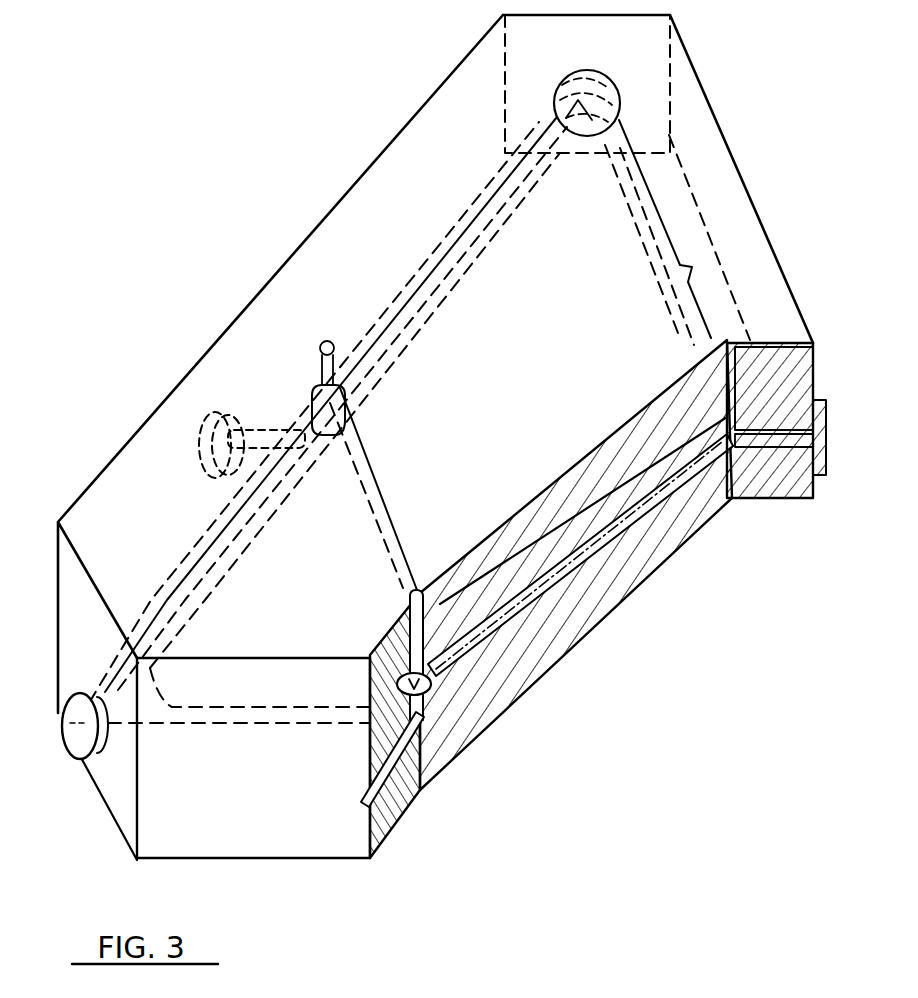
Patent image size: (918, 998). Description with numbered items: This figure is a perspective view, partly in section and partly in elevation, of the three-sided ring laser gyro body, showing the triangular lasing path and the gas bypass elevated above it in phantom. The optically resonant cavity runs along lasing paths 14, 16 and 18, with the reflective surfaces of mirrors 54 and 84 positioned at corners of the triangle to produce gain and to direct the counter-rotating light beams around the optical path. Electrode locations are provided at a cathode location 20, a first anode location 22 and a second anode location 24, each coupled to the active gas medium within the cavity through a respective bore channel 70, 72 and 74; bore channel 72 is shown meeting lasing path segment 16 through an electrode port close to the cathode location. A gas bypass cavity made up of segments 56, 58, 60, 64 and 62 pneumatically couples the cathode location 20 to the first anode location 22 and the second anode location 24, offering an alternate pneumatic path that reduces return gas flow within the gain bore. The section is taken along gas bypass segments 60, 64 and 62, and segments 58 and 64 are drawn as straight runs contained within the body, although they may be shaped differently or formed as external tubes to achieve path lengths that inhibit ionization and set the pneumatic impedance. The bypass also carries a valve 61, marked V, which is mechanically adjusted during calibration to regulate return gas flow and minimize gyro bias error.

The lasing path 14 is at (370, 340).
The lasing path 16 is at (372, 732).
The lasing path 18 is at (677, 232).
The cathode location 20 is at (368, 800).
The anode 1 location 22 is at (202, 443).
The anode 2 location 24 is at (828, 426).
The mirror 54 is at (53, 737).
The gas bypass cavity segment 56 is at (318, 433).
The gas bypass cavity segment 58 is at (384, 540).
The gas bypass cavity segment 60 is at (437, 712).
The valve 61 is at (388, 636).
The gas bypass cavity segment 62 is at (752, 392).
The gas bypass cavity segment 64 is at (568, 528).
The bore channel 70 is at (238, 432).
The bore channel 72 is at (370, 758).
The bore channel 74 is at (750, 458).
The mirror 84 is at (578, 90).